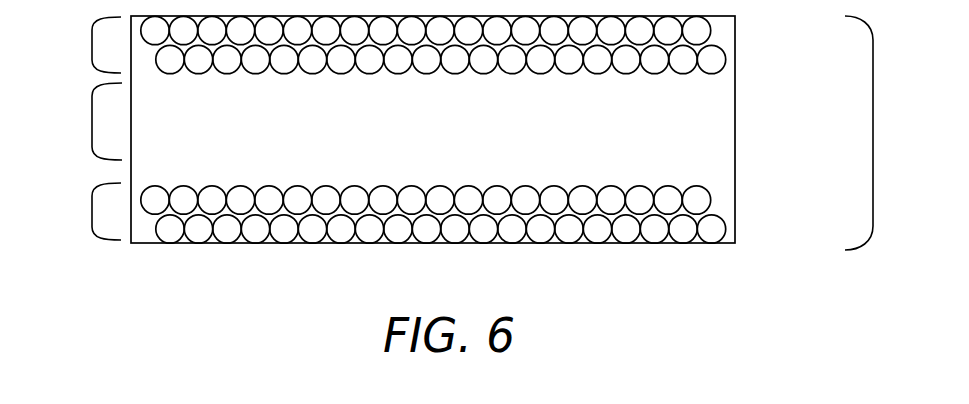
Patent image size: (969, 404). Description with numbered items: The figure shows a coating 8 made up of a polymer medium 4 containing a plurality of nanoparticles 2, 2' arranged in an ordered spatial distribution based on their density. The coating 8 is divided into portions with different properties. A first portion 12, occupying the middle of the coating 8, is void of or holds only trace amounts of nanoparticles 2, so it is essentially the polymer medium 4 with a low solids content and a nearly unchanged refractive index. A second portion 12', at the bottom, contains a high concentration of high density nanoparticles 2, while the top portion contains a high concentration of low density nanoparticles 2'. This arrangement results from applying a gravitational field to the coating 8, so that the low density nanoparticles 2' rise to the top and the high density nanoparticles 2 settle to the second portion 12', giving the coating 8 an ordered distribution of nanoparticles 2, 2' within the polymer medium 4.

The nanoparticles 2 is at (477, 214).
The low density nanoparticles 2' is at (495, 47).
The polymer medium 4 is at (703, 132).
The coating 8 is at (873, 133).
The first portion 12 is at (75, 121).
The second portion 12' is at (75, 211).